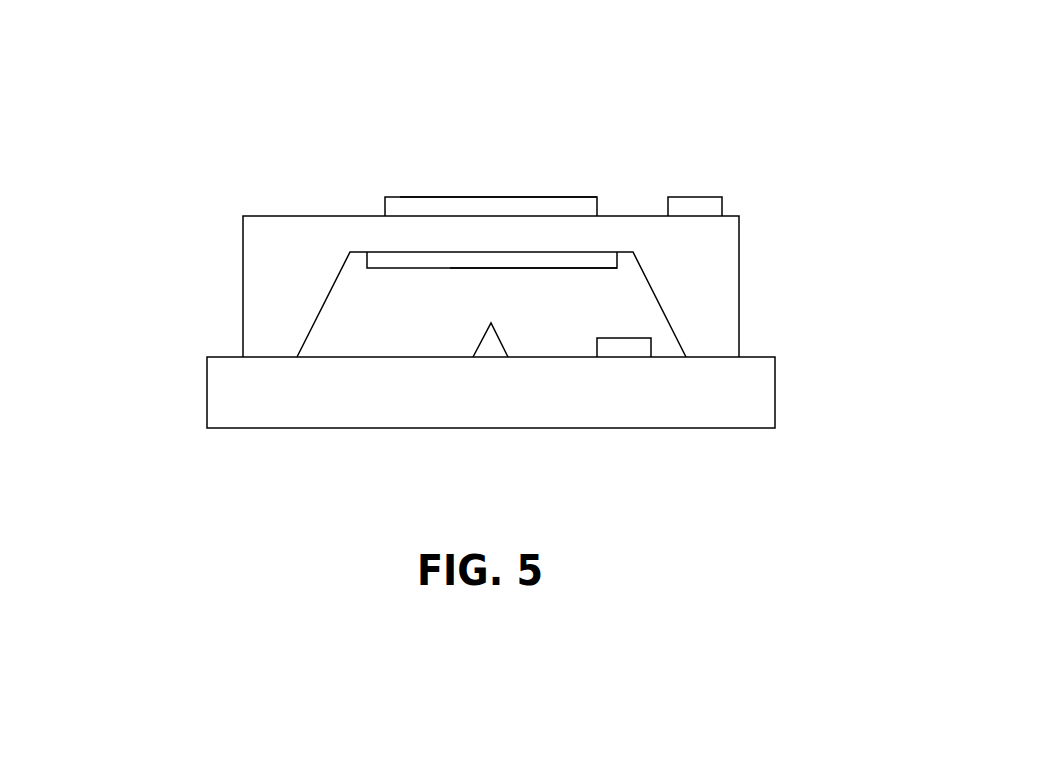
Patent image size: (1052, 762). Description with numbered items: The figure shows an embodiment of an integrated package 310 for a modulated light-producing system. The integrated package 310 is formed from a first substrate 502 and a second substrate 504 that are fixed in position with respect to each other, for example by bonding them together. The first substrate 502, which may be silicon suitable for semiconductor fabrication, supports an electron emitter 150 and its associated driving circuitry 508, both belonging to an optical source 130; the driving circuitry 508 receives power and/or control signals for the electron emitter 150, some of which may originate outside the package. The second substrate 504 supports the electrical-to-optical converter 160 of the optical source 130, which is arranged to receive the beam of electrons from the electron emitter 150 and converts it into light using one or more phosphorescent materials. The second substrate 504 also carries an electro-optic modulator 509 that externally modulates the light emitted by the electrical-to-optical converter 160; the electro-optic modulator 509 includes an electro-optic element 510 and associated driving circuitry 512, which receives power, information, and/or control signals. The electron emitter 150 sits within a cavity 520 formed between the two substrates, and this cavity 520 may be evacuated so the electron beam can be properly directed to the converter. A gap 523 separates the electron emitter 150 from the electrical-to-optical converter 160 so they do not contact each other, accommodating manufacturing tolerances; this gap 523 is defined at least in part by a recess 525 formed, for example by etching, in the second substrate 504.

The integrated package 310 is at (152, 80).
The first substrate 502 is at (207, 392).
The second substrate 504 is at (350, 216).
The optical source 130 is at (340, 306).
The gap 523 is at (490, 298).
The electro-optic element 510 is at (582, 197).
The electro-optic modulator 509 is at (674, 136).
The driving circuitry 512 is at (703, 197).
The cavity 520 is at (610, 287).
The electrical-to-optical converter 160 is at (508, 268).
The driving circuitry 508 is at (632, 338).
The electron emitter 150 is at (485, 340).
The recess 525 is at (373, 323).